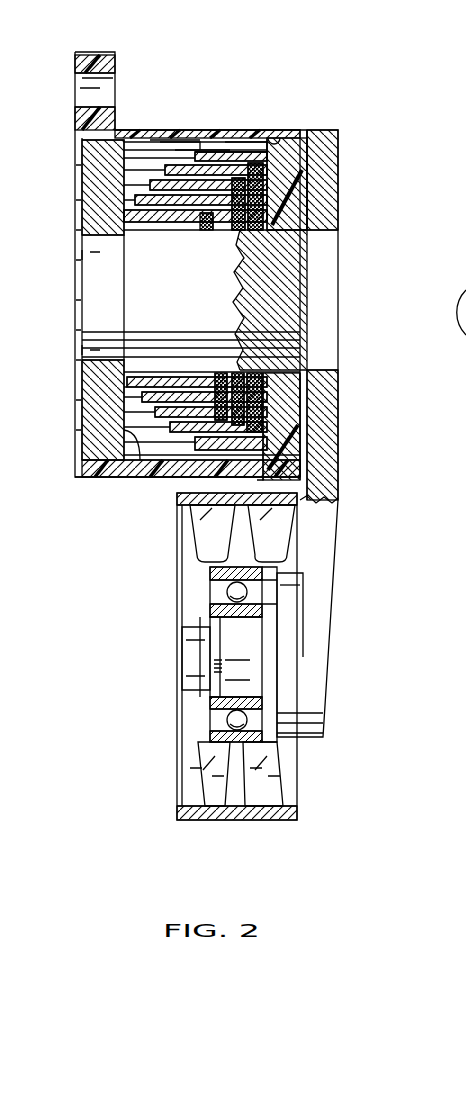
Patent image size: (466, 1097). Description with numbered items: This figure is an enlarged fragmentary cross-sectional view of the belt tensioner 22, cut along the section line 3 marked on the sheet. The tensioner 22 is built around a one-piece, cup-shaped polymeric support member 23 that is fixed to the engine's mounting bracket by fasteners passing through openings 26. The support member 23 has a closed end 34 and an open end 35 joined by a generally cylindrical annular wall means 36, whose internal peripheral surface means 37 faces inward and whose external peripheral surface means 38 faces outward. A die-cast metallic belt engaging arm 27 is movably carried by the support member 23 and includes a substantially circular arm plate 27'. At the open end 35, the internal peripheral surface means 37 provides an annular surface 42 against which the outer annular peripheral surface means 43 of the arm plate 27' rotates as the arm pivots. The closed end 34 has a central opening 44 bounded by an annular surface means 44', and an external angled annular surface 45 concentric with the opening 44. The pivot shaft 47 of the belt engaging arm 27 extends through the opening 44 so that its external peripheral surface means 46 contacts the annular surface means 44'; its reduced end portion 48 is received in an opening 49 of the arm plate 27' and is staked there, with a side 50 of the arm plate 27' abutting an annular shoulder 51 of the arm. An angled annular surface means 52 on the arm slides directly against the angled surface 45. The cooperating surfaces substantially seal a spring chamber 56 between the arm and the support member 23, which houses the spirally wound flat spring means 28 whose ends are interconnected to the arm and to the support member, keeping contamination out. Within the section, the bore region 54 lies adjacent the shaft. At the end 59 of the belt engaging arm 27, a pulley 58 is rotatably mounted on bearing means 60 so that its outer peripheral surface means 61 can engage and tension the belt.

The section line 3- 3 is at (263, 105).
The belt tensioner 22 is at (385, 92).
The support member 23 is at (204, 138).
The openings 26 is at (85, 87).
The belt engaging arm 27 is at (237, 277).
The arm plate 27' is at (75, 410).
The spring means 28 is at (233, 138).
The closed end 34 is at (325, 198).
The open end 35 is at (78, 112).
The annular wall means 36 is at (183, 138).
The internal peripheral surface means 37 is at (162, 139).
The external peripheral surface means 38 is at (170, 138).
The annular surface 42 is at (90, 458).
The outer annular peripheral surface means 43 is at (108, 478).
The opening 44 is at (341, 241).
The annular surface means 44' is at (332, 360).
The external angled annular surface 45 is at (307, 140).
The external peripheral surface means 46 is at (297, 397).
The shaft 47 is at (222, 283).
The reduced end portion 48 is at (88, 282).
The opening 49 is at (118, 236).
The side 50 is at (128, 445).
The annular shoulder 51 is at (126, 236).
The angled annular surface means 52 is at (275, 137).
The bore 54 is at (72, 307).
The spring chamber 56 is at (150, 178).
The pulley 58 is at (200, 750).
The end 59 is at (245, 632).
The bearing means 60 is at (213, 575).
The outer peripheral surface means 61 is at (225, 822).